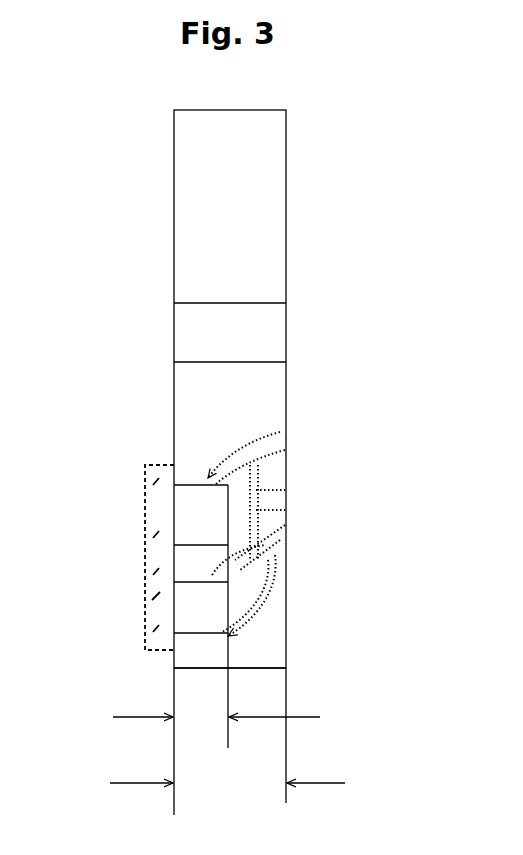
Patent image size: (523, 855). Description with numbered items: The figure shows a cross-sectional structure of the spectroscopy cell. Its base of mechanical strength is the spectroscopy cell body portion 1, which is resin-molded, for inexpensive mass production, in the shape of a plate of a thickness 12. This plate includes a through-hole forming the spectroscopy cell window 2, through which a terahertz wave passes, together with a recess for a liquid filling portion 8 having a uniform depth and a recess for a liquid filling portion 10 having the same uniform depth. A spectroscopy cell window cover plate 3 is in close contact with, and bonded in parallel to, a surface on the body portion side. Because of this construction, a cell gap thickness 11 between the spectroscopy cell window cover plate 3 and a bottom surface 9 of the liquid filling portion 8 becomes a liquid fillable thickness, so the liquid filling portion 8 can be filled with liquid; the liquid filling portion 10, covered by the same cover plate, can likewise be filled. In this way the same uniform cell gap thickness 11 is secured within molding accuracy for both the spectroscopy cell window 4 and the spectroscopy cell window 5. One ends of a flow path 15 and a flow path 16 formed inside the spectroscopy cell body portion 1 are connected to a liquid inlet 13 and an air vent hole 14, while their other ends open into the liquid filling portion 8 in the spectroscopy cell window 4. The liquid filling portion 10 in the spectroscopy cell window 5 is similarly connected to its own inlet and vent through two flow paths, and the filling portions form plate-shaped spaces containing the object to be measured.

The spectroscopy cell body portion 1 is at (288, 200).
The spectroscopy cell window 2 is at (154, 317).
The spectroscopy cell window cover plate 3 is at (142, 474).
The spectroscopy cell window 4 is at (133, 521).
The spectroscopy cell window 5 is at (138, 600).
The liquid filling portion 8 is at (200, 482).
The bottom surface 9 is at (286, 520).
The liquid filling portion 10 is at (195, 636).
The cell gap thickness 11 is at (238, 718).
The thickness 12 is at (250, 784).
The liquid inlet 13 is at (286, 478).
The air vent hole 14 is at (286, 442).
The flow path 15 is at (286, 507).
The flow path 16 is at (286, 492).